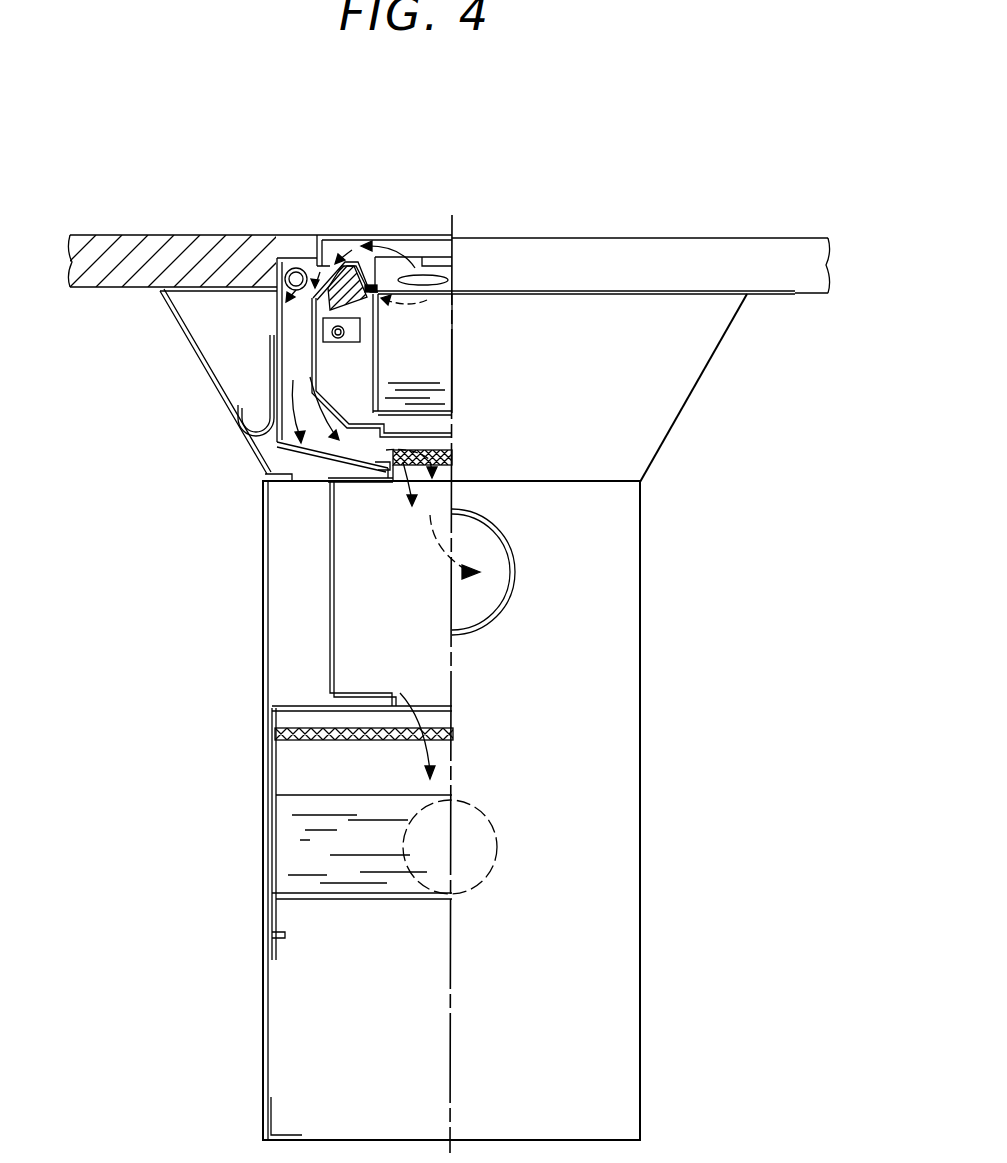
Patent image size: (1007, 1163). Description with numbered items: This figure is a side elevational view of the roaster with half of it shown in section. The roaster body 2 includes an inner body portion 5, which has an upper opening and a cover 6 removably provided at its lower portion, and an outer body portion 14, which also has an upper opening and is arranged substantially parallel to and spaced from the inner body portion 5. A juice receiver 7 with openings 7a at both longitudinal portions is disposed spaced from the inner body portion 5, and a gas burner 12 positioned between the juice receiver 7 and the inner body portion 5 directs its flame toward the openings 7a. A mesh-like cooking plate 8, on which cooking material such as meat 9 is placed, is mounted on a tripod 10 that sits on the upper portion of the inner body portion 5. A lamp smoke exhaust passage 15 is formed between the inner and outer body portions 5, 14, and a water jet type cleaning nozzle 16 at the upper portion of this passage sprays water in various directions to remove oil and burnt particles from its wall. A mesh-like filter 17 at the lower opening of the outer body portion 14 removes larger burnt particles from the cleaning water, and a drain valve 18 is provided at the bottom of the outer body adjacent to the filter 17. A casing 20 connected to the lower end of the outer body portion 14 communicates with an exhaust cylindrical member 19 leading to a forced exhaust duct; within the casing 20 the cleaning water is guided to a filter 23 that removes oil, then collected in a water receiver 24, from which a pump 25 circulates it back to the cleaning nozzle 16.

The roaster body 2 is at (390, 208).
The inner body portion 5 is at (280, 444).
The cover 6 is at (455, 415).
The juice receiver 7 is at (340, 466).
The openings 7a is at (456, 335).
The cooking plate 8 is at (456, 290).
The meat 9 is at (424, 276).
The tripod 10 is at (340, 260).
The gas burner 12 is at (336, 342).
The outer body portion 14 is at (280, 327).
The lamp smoke exhaust passage 15 is at (285, 312).
The cleaning nozzle 16 is at (293, 266).
The filter 17 is at (455, 452).
The drain valve 18 is at (382, 478).
The exhaust cylindrical member 19 is at (500, 572).
The casing 20 is at (638, 745).
The filter 23 is at (312, 742).
The water receiver 24 is at (288, 832).
The pump 25 is at (498, 848).